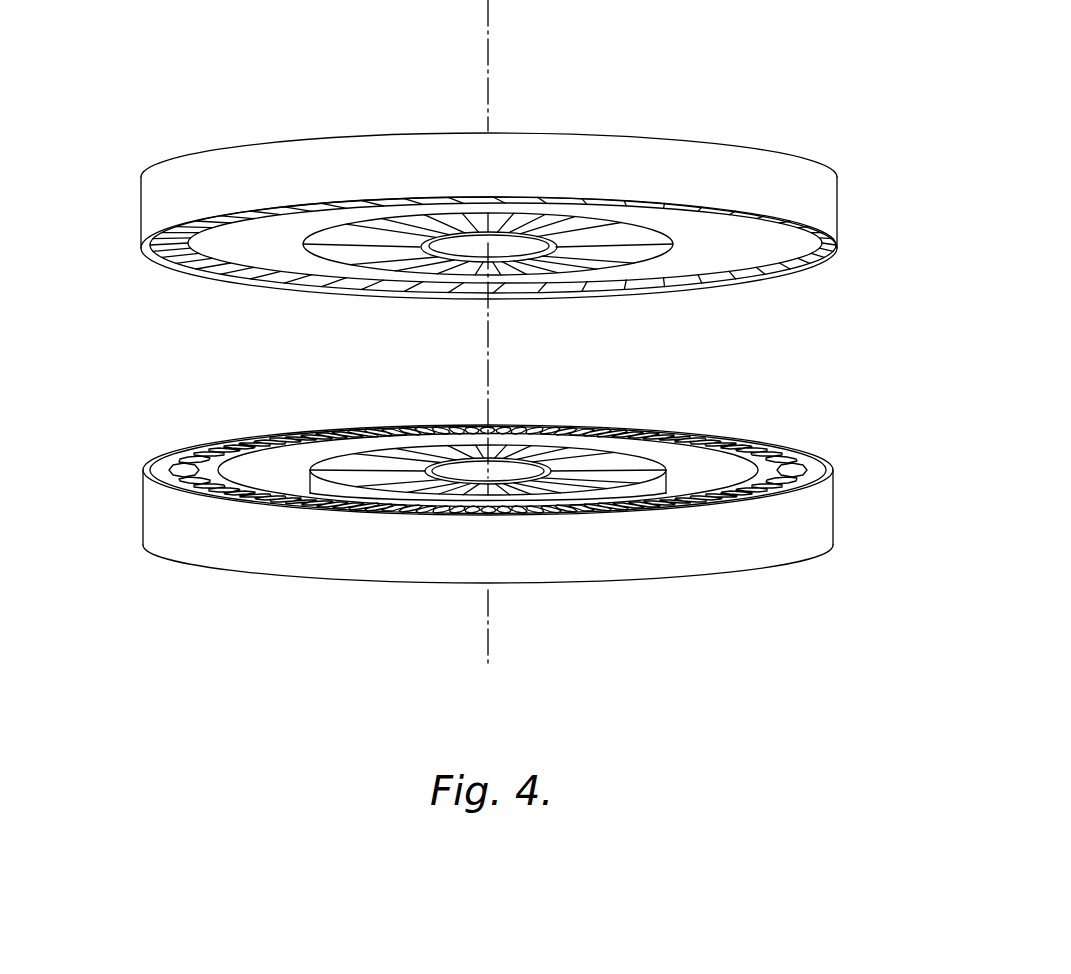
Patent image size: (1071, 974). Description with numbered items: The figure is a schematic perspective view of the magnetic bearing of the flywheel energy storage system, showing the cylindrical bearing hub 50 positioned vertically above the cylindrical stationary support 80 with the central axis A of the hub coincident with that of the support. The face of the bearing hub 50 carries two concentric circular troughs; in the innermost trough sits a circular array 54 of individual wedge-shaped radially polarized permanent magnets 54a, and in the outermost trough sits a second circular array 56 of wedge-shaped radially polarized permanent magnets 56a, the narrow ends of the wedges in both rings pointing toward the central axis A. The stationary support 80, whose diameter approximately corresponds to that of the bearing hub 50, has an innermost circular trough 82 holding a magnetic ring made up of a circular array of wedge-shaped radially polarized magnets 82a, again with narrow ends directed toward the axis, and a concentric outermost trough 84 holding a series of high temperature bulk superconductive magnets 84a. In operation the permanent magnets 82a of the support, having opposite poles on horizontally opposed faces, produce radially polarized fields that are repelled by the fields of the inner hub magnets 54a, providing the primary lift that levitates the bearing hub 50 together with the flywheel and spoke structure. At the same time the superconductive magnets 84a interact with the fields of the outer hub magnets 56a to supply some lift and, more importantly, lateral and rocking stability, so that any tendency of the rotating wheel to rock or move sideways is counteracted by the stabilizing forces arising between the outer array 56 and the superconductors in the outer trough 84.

The central axis A is at (495, 62).
The bearing hub 50 is at (826, 198).
The circular array 54 is at (660, 240).
The wedge-shaped radially polarized permanent magnets 54a is at (587, 230).
The circular array 56 is at (833, 260).
The wedge-shaped radially polarized permanent magnets 56a is at (740, 283).
The stationary support 80 is at (830, 512).
The innermost circular trough 82 is at (308, 473).
The wedge-shaped radially polarized magnets 82a is at (567, 457).
The outermost trough 84 is at (790, 445).
The high temperature bulk superconductive magnets 84a is at (235, 495).